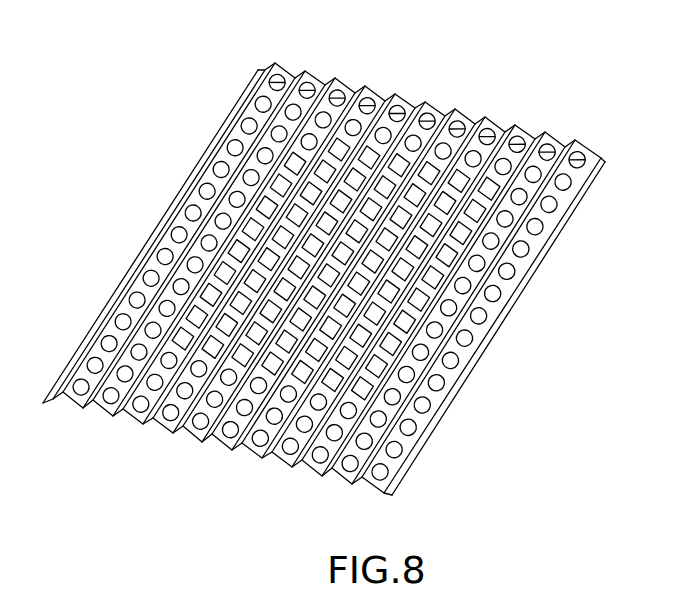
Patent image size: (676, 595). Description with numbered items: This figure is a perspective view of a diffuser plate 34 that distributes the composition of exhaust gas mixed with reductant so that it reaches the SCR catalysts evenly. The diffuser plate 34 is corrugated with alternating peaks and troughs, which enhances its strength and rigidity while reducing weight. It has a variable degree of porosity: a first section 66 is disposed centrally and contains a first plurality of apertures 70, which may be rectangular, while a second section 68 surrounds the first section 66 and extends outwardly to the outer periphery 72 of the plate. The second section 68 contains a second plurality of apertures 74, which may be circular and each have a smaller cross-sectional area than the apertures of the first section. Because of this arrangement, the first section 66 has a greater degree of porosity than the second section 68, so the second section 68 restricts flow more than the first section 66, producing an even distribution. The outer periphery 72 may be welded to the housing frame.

The diffuser plate 34 is at (333, 263).
The first section 66 is at (252, 346).
The second section 68 is at (498, 237).
The first plurality of apertures 70 is at (173, 344).
The outer periphery 72 is at (437, 427).
The second plurality of apertures 74 is at (473, 334).